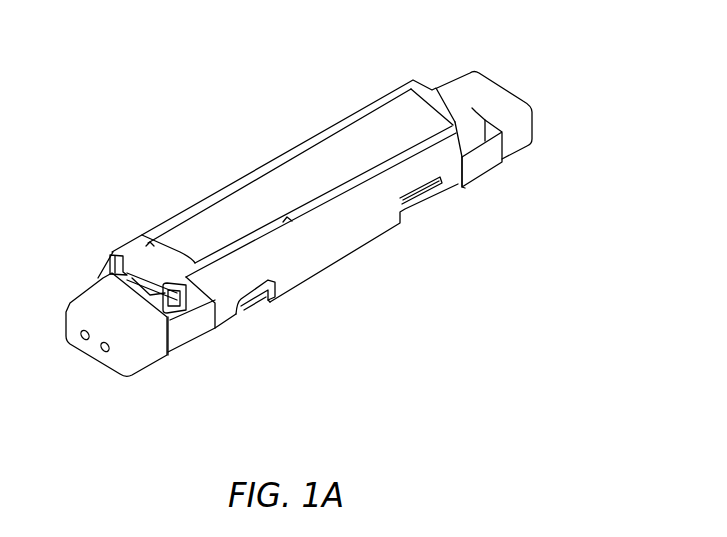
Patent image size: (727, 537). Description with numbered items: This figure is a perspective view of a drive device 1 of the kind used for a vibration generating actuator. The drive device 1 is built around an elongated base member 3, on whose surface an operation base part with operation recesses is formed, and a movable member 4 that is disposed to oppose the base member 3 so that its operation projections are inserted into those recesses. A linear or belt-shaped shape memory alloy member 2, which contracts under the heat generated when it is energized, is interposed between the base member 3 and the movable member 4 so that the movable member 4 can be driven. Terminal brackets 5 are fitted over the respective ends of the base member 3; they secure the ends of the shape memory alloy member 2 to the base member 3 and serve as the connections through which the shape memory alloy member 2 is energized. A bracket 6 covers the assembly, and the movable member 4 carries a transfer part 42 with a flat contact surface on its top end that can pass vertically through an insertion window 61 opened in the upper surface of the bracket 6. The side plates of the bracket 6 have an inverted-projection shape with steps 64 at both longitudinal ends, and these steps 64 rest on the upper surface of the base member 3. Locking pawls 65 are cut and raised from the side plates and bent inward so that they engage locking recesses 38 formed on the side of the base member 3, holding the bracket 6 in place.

The drive device 1 is at (253, 158).
The shape memory alloy member 2 is at (167, 310).
The base member 3 is at (187, 335).
The movable member 4 is at (197, 222).
The terminal bracket 5 is at (83, 308).
The bracket 6 is at (363, 243).
The locking recess 38 is at (268, 298).
The transfer part 42 is at (331, 148).
The insertion window 61 is at (287, 220).
The step 64 is at (158, 252).
The locking pawl 65 is at (252, 305).